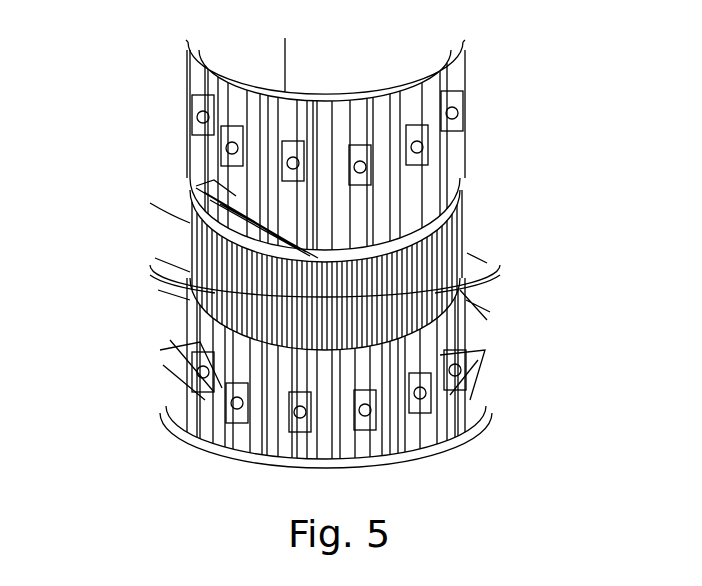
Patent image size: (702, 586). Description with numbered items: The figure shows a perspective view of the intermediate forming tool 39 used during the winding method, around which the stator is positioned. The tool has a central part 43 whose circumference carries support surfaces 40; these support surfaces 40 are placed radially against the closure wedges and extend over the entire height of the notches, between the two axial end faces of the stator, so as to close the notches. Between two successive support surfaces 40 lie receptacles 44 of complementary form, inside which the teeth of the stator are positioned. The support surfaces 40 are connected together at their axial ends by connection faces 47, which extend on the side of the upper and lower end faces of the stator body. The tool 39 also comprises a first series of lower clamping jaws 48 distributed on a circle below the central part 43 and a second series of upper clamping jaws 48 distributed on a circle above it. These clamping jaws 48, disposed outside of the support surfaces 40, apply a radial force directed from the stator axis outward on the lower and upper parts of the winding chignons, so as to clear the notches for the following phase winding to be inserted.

The intermediate forming tool 39 is at (113, 77).
The support surfaces 40 is at (460, 250).
The central part 43 is at (139, 253).
The receptacles 44 is at (215, 318).
The connection faces 47 is at (212, 222).
The clamping jaws 48 is at (202, 183).